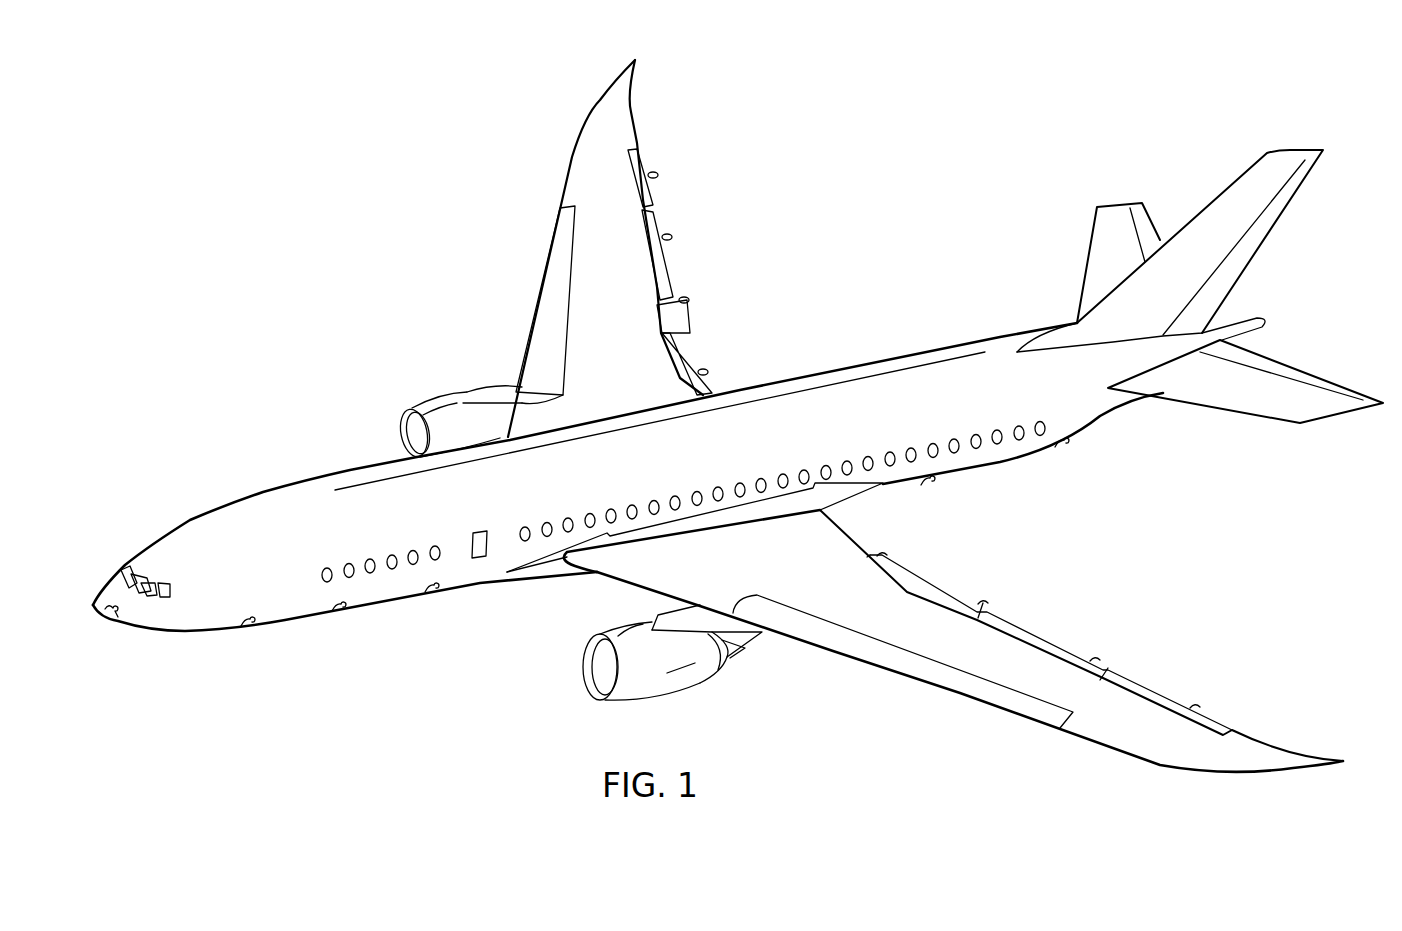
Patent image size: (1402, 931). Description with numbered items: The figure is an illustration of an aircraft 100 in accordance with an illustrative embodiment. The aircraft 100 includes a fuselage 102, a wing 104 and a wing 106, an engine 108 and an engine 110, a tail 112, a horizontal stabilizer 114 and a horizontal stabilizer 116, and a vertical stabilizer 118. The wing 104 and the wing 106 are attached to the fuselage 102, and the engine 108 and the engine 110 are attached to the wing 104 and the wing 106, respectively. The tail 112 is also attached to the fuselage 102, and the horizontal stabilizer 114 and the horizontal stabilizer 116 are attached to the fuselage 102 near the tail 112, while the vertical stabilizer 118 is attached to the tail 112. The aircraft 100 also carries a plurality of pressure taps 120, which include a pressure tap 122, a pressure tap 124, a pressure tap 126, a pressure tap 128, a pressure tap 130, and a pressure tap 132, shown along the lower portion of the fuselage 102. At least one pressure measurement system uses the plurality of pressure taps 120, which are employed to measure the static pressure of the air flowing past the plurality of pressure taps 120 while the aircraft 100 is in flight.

The aircraft 100 is at (408, 236).
The fuselage 102 is at (266, 493).
The wing 104 is at (637, 96).
The wing 106 is at (1195, 771).
The engine 108 is at (440, 392).
The engine 110 is at (670, 696).
The tail 112 is at (1162, 460).
The horizontal stabilizer 114 is at (1084, 262).
The horizontal stabilizer 116 is at (1250, 412).
The vertical stabilizer 118 is at (1278, 235).
The plurality of pressure taps 120 is at (180, 677).
The pressure tap 122 is at (118, 617).
The pressure tap 124 is at (247, 624).
The pressure tap 126 is at (339, 609).
The pressure tap 128 is at (431, 590).
The pressure tap 130 is at (928, 484).
The pressure tap 132 is at (1063, 445).